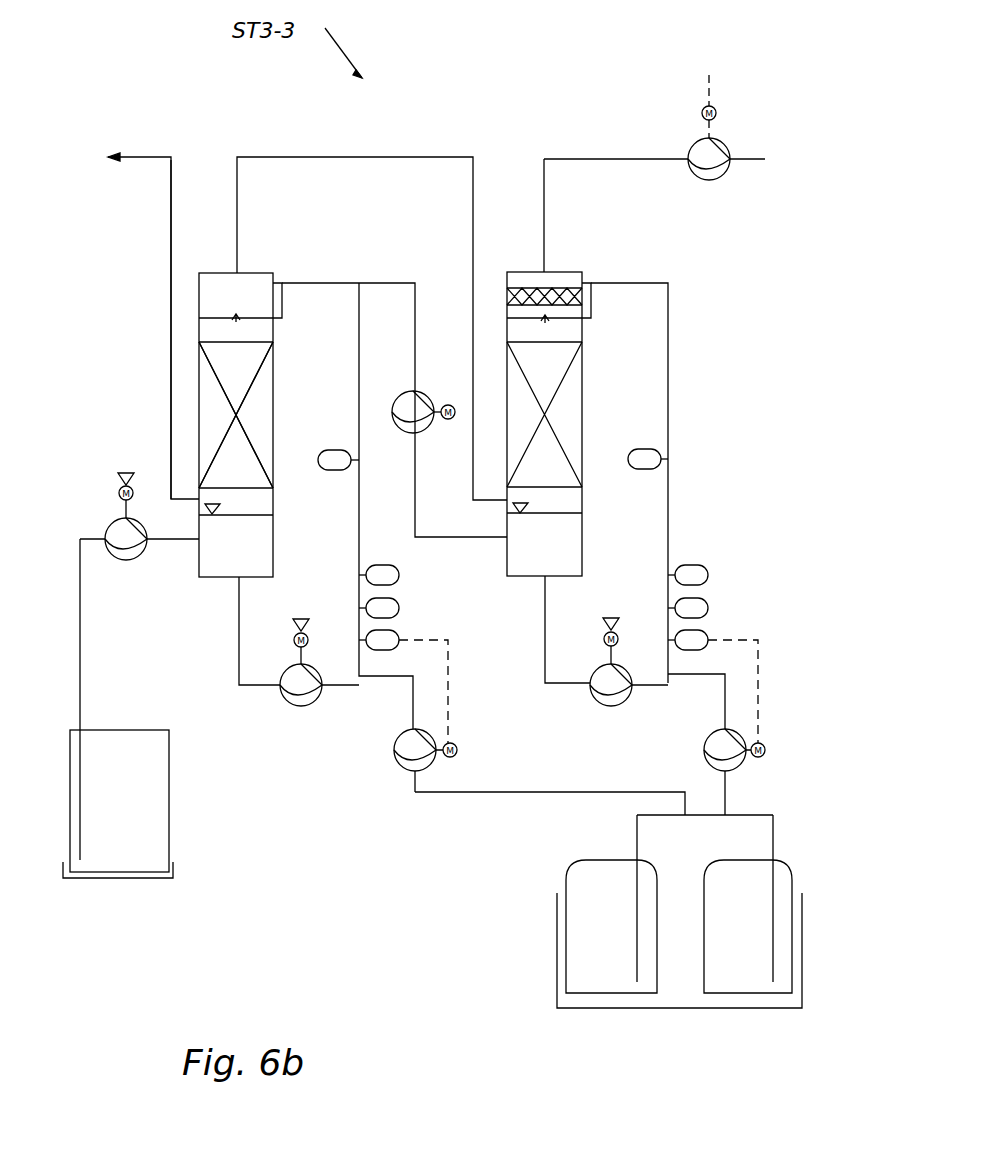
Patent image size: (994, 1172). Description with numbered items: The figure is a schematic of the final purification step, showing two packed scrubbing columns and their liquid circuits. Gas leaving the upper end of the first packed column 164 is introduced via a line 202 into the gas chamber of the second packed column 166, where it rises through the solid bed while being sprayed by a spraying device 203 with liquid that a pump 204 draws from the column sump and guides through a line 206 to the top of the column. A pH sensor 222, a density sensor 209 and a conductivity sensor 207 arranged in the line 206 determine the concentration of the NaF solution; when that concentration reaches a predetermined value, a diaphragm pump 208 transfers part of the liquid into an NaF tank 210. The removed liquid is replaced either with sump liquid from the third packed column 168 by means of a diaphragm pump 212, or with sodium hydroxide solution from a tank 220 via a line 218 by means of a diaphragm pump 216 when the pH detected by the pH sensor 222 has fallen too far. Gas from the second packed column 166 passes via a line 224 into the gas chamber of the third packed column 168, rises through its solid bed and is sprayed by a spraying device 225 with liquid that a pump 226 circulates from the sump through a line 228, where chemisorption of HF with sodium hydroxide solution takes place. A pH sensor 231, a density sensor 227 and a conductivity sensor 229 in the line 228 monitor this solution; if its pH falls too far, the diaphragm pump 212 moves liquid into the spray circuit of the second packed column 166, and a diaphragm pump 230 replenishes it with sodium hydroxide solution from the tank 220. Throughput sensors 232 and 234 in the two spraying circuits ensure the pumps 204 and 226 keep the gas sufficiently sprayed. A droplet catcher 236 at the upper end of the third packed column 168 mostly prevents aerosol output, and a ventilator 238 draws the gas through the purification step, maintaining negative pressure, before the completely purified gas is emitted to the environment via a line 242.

The first packed column 164 is at (122, 324).
The line 202 is at (171, 225).
The spraying device 203 is at (236, 316).
The line 224 is at (296, 157).
The second packed column 166 is at (262, 403).
The throughput sensor 232 is at (340, 452).
The diaphragm pump 212 is at (418, 400).
The line 206 is at (359, 563).
The density sensor 209 is at (399, 575).
The conductivity sensor 207 is at (399, 608).
The pH sensor 222 is at (403, 686).
The diaphragm pump 208 is at (125, 560).
The NaF tank 210 is at (117, 748).
The pump 204 is at (288, 702).
The diaphragm pump 216 is at (400, 760).
The line 218 is at (445, 793).
The droplet catcher 236 is at (527, 290).
The spraying device 225 is at (548, 318).
The ventilator 238 is at (688, 150).
The line 242 is at (777, 159).
The third packed column 168 is at (575, 396).
The line 228 is at (672, 372).
The throughput sensor 234 is at (635, 452).
The density sensor 227 is at (700, 572).
The conductivity sensor 229 is at (708, 606).
The pH sensor 231 is at (708, 638).
The pump 226 is at (595, 703).
The diaphragm pump 230 is at (705, 752).
The tank 220 is at (733, 982).